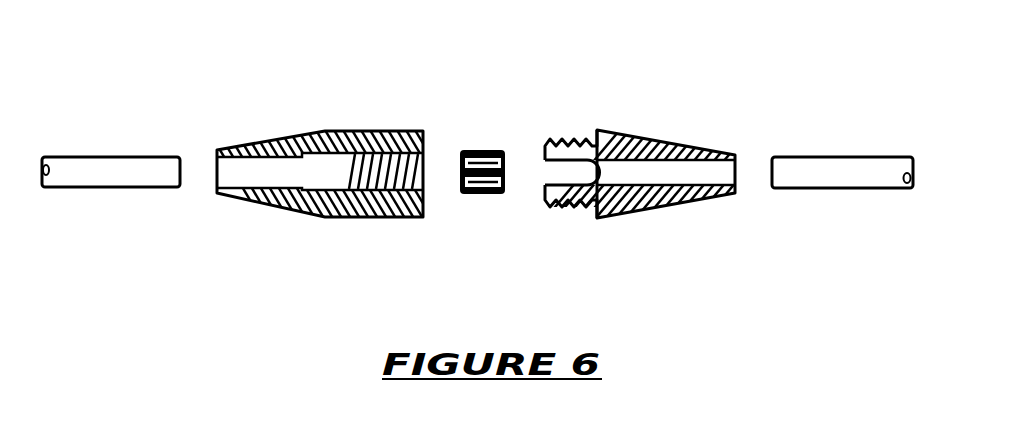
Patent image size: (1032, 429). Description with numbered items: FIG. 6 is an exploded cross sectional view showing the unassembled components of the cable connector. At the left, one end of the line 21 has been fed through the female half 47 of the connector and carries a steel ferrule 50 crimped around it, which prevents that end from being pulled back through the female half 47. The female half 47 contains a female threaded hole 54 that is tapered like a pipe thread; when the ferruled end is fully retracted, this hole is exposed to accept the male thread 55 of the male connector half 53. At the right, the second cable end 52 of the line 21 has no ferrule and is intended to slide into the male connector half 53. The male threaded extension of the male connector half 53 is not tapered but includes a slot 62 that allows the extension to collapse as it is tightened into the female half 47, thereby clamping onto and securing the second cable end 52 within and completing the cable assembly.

The line 21 is at (117, 158).
The female half of the connector 47 is at (288, 134).
The steel ferrule 50 is at (487, 150).
The second cable end 52 is at (773, 192).
The male connector half 53 is at (623, 130).
The female threaded hole 54 is at (414, 162).
The male thread 55 is at (558, 138).
The slot 62 is at (565, 175).